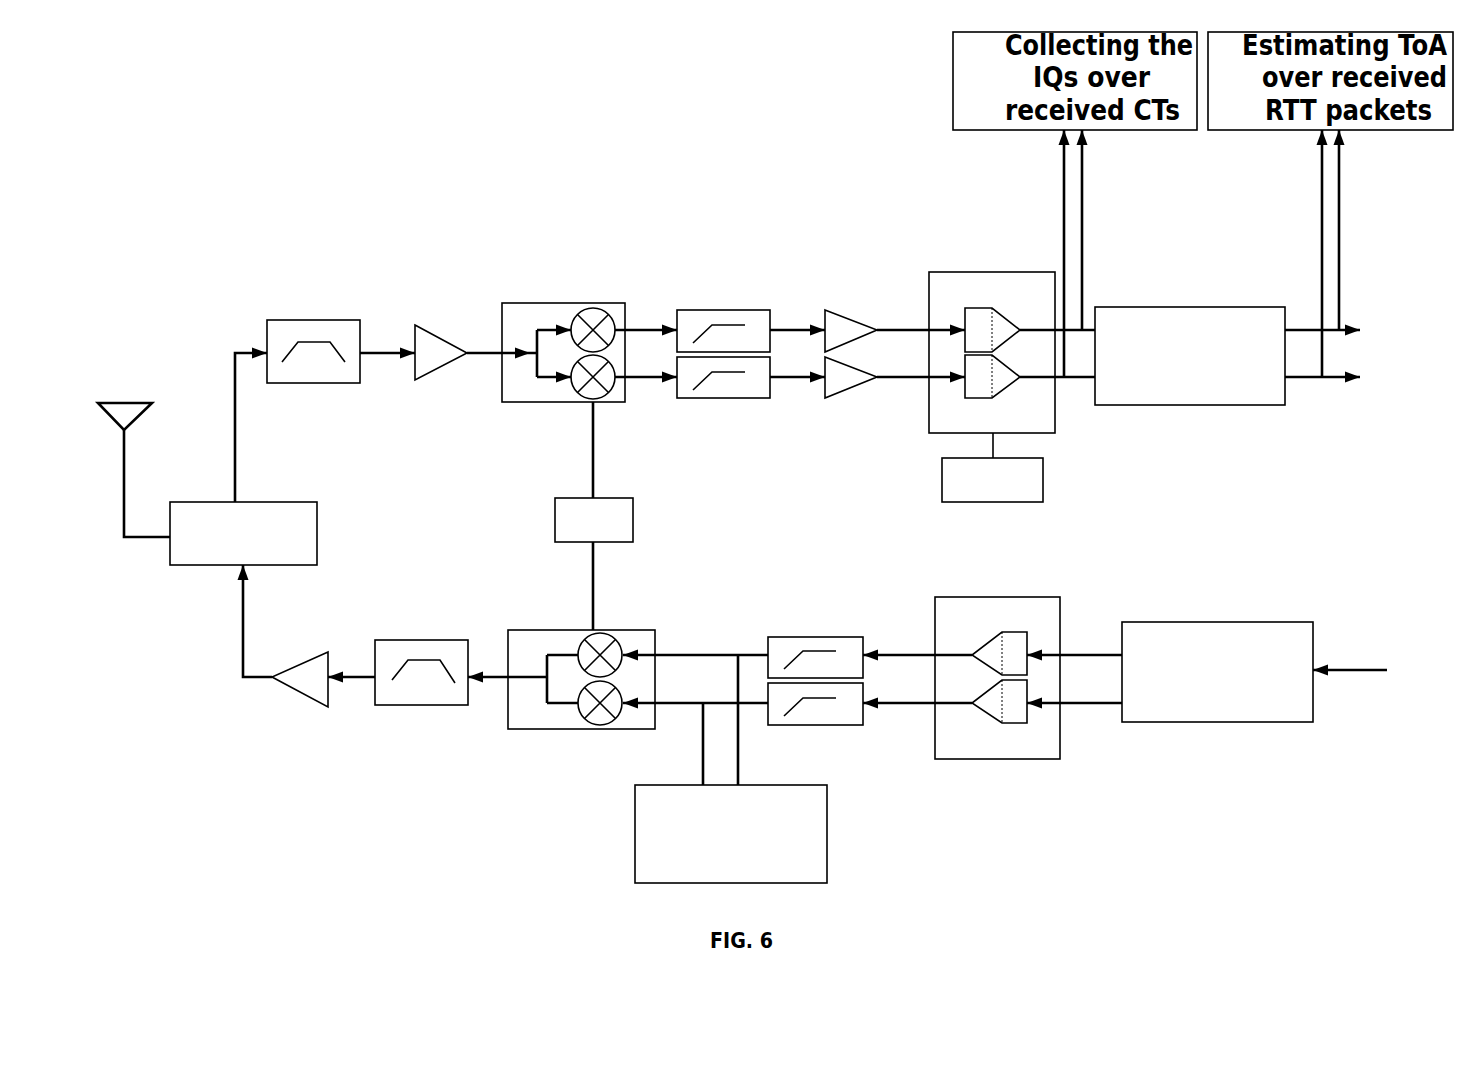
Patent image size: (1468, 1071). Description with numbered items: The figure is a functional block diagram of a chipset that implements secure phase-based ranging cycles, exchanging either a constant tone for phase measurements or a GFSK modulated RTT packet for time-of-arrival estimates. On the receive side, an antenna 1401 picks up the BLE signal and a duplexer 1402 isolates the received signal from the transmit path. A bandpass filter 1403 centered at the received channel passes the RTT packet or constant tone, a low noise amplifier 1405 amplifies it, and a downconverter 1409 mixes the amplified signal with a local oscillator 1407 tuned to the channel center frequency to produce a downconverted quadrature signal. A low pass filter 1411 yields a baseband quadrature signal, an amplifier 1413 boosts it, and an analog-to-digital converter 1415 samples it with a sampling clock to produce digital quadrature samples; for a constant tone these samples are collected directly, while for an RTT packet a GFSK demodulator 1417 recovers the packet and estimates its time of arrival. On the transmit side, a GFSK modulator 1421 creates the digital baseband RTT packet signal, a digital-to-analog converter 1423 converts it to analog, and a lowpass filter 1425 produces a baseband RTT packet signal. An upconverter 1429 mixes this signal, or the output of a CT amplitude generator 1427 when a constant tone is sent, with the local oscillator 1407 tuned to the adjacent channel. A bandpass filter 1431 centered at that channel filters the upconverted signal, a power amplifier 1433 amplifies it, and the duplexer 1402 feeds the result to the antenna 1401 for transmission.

The antenna 1401 is at (140, 413).
The duplexer 1402 is at (232, 568).
The bandpass filter 1403 is at (305, 385).
The low noise amplifier (LNA) 1405 is at (438, 370).
The local oscillator (LO) 1407 is at (633, 498).
The downconverter 1409 is at (558, 297).
The low pass filter 1411 is at (705, 308).
The amplifier 1413 is at (840, 310).
The analog-to-digital converter (ADC) 1415 is at (950, 270).
The GFSK demodulator 1417 is at (1203, 304).
The GFSK modulator 1421 is at (1228, 620).
The digital-to-analog converter (DAC) 1423 is at (960, 595).
The lowpass filter 1425 is at (795, 637).
The CT amplitude generator 1427 is at (800, 783).
The upconverter 1429 is at (632, 630).
The bandpass filter 1431 is at (423, 638).
The power amplifier (PA) 1433 is at (295, 693).